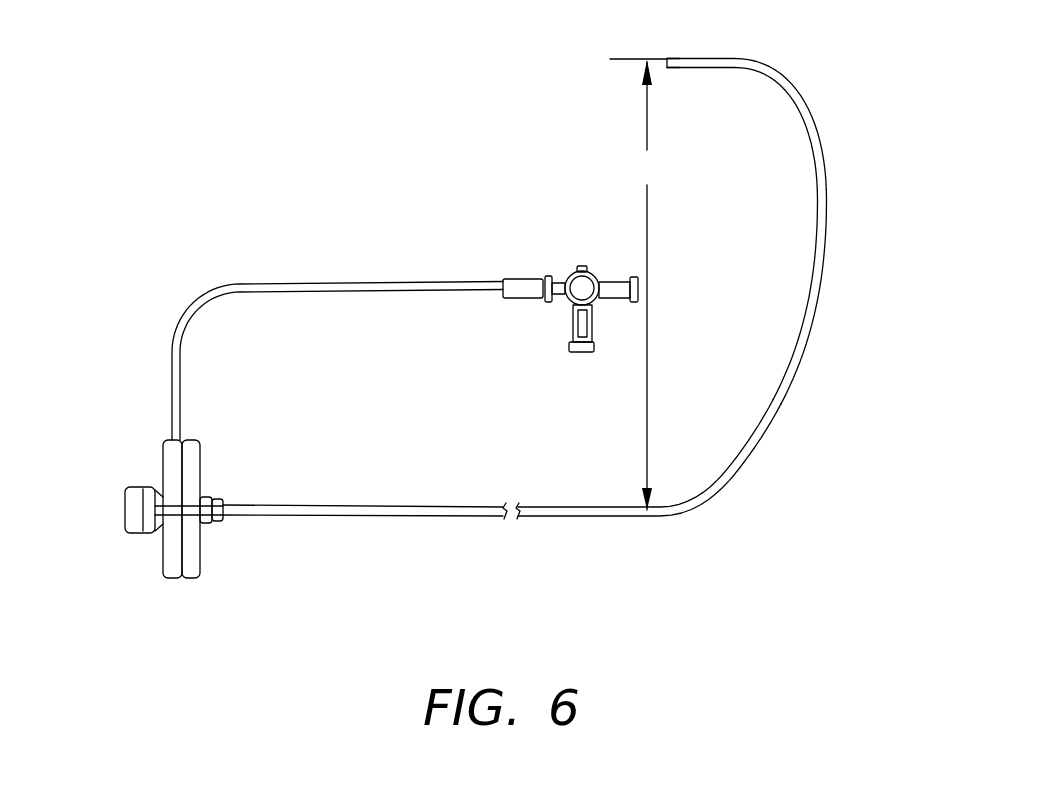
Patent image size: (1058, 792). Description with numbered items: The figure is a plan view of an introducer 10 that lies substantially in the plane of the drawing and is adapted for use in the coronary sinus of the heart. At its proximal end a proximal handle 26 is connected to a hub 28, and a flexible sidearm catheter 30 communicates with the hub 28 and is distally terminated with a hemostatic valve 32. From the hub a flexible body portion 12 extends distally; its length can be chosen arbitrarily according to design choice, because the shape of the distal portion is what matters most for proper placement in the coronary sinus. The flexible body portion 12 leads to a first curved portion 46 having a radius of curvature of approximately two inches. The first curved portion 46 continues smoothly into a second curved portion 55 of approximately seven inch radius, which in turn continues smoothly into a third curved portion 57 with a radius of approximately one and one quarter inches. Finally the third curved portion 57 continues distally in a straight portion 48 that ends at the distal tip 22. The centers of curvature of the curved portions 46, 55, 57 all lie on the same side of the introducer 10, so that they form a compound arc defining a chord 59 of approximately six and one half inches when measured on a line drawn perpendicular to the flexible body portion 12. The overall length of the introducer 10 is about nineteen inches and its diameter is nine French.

The introducer 10 is at (400, 207).
The flexible body portion 12 is at (635, 490).
The distal tip 22 is at (664, 67).
The proximal handle 26 is at (200, 447).
The hub 28 is at (147, 483).
The flexible sidearm catheter 30 is at (355, 292).
The hemostatic valve 32 is at (568, 272).
The first curved portion 46 is at (817, 408).
The straight portion 48 is at (770, 53).
The second curved portion 55 is at (847, 183).
The third curved portion 57 is at (777, 53).
The chord 59 is at (638, 284).